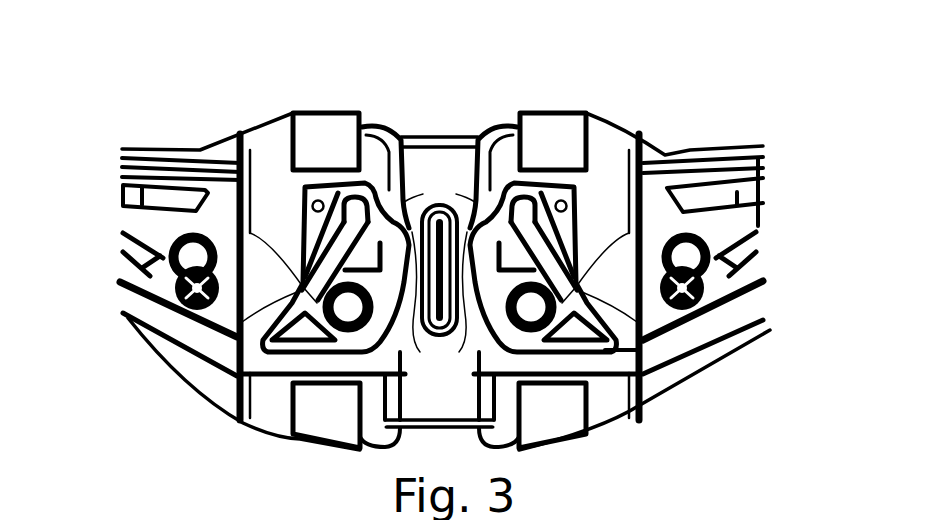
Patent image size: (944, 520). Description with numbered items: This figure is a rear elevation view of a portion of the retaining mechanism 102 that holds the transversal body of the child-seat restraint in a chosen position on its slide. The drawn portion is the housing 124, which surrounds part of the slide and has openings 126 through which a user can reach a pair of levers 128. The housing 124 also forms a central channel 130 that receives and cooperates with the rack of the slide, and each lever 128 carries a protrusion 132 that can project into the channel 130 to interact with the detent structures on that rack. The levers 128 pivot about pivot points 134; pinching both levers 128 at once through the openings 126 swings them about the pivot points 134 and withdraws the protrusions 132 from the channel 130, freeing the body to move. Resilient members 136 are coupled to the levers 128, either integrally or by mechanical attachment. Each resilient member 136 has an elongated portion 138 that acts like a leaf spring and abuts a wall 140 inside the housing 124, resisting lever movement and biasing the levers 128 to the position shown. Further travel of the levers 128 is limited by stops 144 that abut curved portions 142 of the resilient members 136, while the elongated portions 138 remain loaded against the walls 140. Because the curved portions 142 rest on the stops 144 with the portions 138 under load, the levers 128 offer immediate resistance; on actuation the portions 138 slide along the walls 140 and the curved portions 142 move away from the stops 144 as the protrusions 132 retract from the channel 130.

The retaining mechanism 102 is at (469, 120).
The housing 124 is at (677, 370).
The openings 126 is at (290, 358).
The levers 128 is at (270, 378).
The channel 130 is at (440, 129).
The protrusions 132 is at (438, 334).
The pivot points 134 is at (687, 337).
The resilient members 136 is at (340, 228).
The elongated portion 138 is at (202, 152).
The wall 140 is at (300, 205).
The curved portions 142 is at (392, 165).
The stops 144 is at (430, 197).